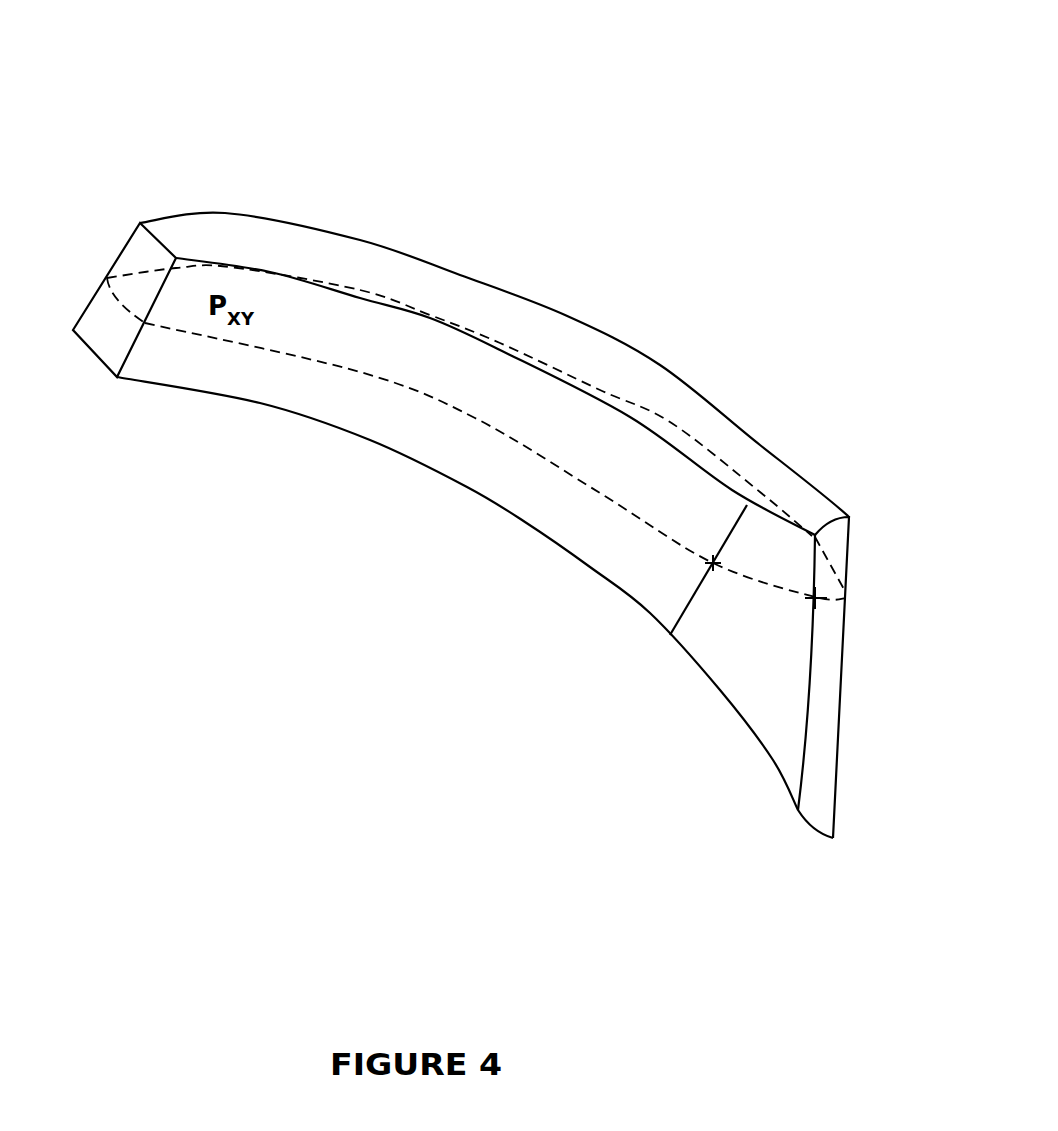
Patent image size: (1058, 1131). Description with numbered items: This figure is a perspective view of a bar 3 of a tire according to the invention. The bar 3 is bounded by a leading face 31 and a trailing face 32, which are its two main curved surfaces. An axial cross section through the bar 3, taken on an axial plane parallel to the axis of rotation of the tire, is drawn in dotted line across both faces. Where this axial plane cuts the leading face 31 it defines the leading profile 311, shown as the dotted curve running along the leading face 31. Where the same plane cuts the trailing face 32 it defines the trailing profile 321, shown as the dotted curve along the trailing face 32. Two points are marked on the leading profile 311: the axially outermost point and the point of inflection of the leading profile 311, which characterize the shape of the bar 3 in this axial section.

The bar 3 is at (422, 240).
The trailing face 32 is at (565, 313).
The trailing profile 321 is at (662, 425).
The leading face 31 is at (303, 390).
The leading profile 311 is at (463, 413).